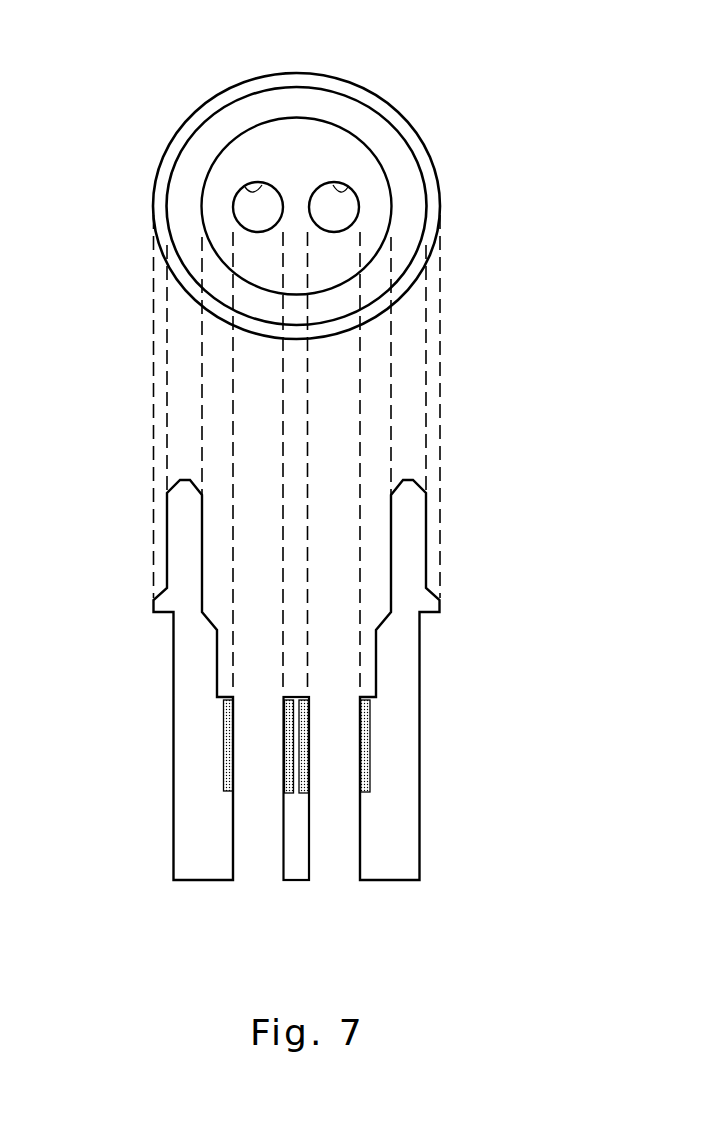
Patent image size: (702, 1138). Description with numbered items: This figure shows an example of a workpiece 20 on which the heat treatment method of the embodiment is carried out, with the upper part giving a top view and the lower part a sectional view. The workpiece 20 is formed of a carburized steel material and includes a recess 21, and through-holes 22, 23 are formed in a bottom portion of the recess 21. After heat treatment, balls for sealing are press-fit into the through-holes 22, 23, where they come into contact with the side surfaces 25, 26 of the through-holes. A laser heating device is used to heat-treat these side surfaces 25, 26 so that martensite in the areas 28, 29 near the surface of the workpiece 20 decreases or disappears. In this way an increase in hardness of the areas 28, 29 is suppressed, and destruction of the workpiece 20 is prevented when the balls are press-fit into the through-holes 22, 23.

The workpiece 20 is at (458, 62).
The recess 21 is at (247, 153).
The through-hole 22 is at (235, 192).
The through-hole 23 is at (358, 193).
The side surface 25 is at (248, 210).
The side surface 26 is at (338, 208).
The area 28 is at (225, 740).
The area 29 is at (368, 740).